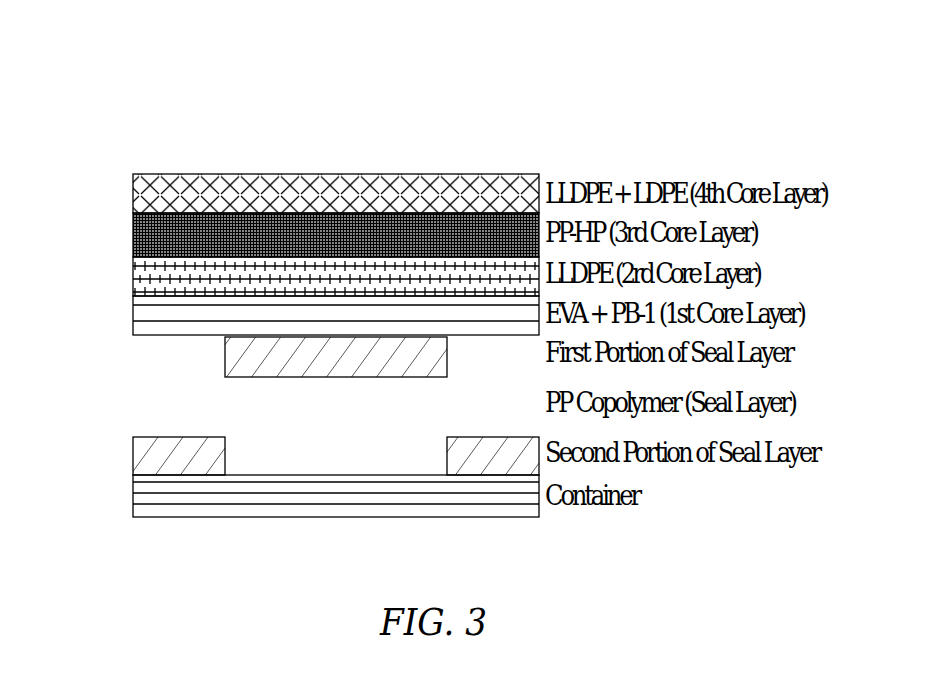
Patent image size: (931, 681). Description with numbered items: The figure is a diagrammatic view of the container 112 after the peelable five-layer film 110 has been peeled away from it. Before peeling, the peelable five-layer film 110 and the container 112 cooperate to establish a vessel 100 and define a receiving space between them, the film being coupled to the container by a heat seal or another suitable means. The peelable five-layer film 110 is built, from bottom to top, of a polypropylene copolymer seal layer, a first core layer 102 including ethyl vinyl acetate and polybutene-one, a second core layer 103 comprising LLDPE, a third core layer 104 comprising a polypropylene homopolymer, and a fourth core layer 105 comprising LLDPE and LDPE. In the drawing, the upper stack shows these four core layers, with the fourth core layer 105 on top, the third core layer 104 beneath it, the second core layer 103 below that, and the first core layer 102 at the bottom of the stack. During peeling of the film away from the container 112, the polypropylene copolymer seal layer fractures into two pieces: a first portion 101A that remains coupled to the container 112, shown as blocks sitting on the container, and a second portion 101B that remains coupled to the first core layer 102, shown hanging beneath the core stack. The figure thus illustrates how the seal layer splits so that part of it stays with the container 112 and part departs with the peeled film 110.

The vessel 100 is at (502, 108).
The peelable five-layer film 110 is at (69, 143).
The fourth core layer 105 is at (146, 196).
The third core layer 104 is at (148, 238).
The second core layer 103 is at (148, 274).
The first core layer 102 is at (150, 320).
The second portion 101B is at (238, 346).
The first portion 101A is at (448, 461).
The container 112 is at (352, 505).